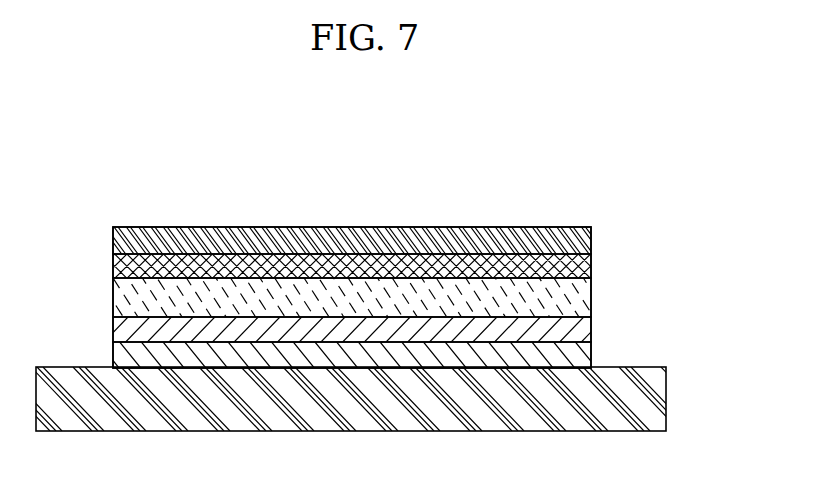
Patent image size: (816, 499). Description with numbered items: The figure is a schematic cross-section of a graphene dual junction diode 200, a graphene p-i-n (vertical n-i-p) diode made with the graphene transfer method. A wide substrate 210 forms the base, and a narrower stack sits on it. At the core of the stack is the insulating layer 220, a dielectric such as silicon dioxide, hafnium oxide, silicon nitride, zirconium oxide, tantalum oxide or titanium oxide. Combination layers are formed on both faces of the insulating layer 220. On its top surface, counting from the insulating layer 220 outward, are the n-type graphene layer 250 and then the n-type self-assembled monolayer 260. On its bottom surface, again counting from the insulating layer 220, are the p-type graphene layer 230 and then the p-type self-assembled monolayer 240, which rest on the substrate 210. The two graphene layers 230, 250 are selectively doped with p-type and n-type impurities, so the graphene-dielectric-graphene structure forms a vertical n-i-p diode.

The graphene dual junction diode 200 is at (383, 182).
The substrate 210 is at (660, 398).
The insulating layer 220 is at (582, 297).
The p-type graphene layer 230 is at (582, 328).
The p-type self-assembled monolayer 240 is at (584, 355).
The n-type graphene layer 250 is at (592, 266).
The n-type self-assembled monolayer 260 is at (592, 238).